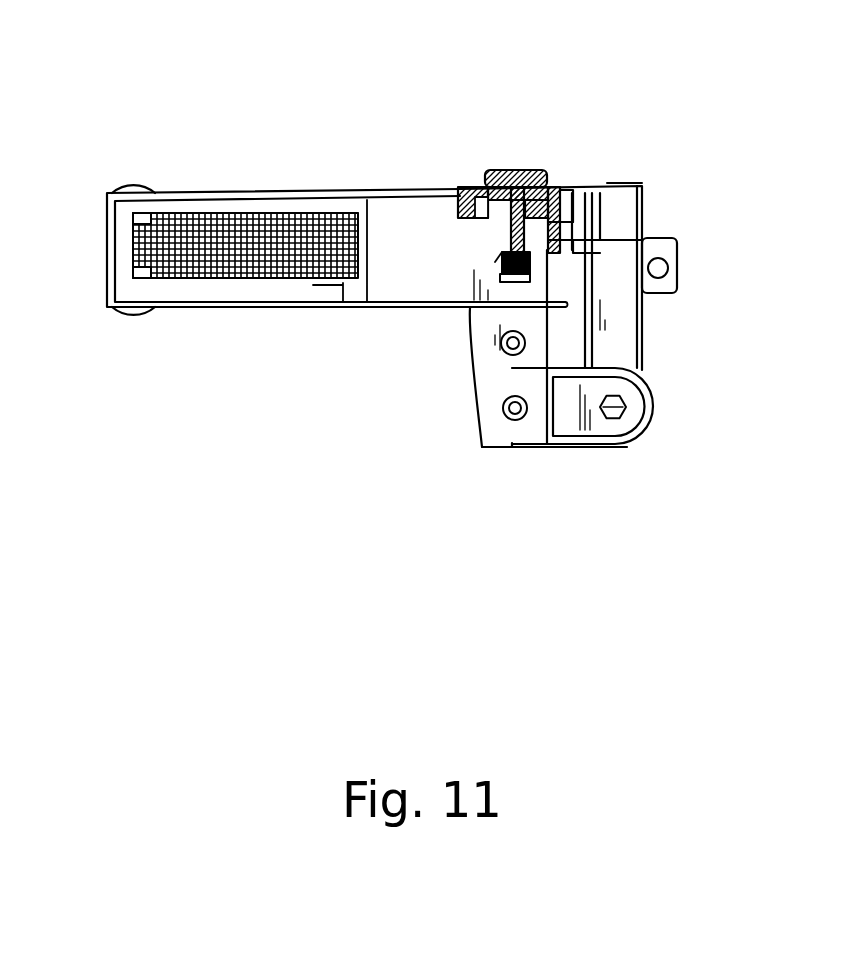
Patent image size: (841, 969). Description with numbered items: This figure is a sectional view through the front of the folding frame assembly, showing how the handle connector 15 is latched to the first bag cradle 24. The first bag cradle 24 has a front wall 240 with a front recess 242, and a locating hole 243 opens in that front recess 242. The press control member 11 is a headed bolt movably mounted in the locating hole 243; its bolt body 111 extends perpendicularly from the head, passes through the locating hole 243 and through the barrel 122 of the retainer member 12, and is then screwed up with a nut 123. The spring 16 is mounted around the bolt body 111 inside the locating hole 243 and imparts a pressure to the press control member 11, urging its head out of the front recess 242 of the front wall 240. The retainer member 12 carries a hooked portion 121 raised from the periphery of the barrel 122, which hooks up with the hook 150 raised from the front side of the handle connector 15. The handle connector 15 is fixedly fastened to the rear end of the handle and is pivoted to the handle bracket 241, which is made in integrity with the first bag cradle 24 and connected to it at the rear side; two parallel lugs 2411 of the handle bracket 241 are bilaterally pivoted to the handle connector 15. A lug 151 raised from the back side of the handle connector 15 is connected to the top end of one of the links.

The press control member 11 is at (520, 170).
The retainer member 12 is at (480, 264).
The handle connector 15 is at (643, 337).
The spring 16 is at (563, 188).
The first bag cradle 24 is at (105, 237).
The bolt body 111 is at (555, 222).
The hooked portion 121 is at (575, 245).
The barrel 122 is at (495, 262).
The nut 123 is at (503, 260).
The hook 150 is at (497, 268).
The lug 151 is at (668, 275).
The front wall 240 is at (607, 183).
The handle bracket 241 is at (577, 447).
The front recess 242 is at (468, 187).
The locating hole 243 is at (600, 198).
The parallel lugs 2411 is at (618, 445).